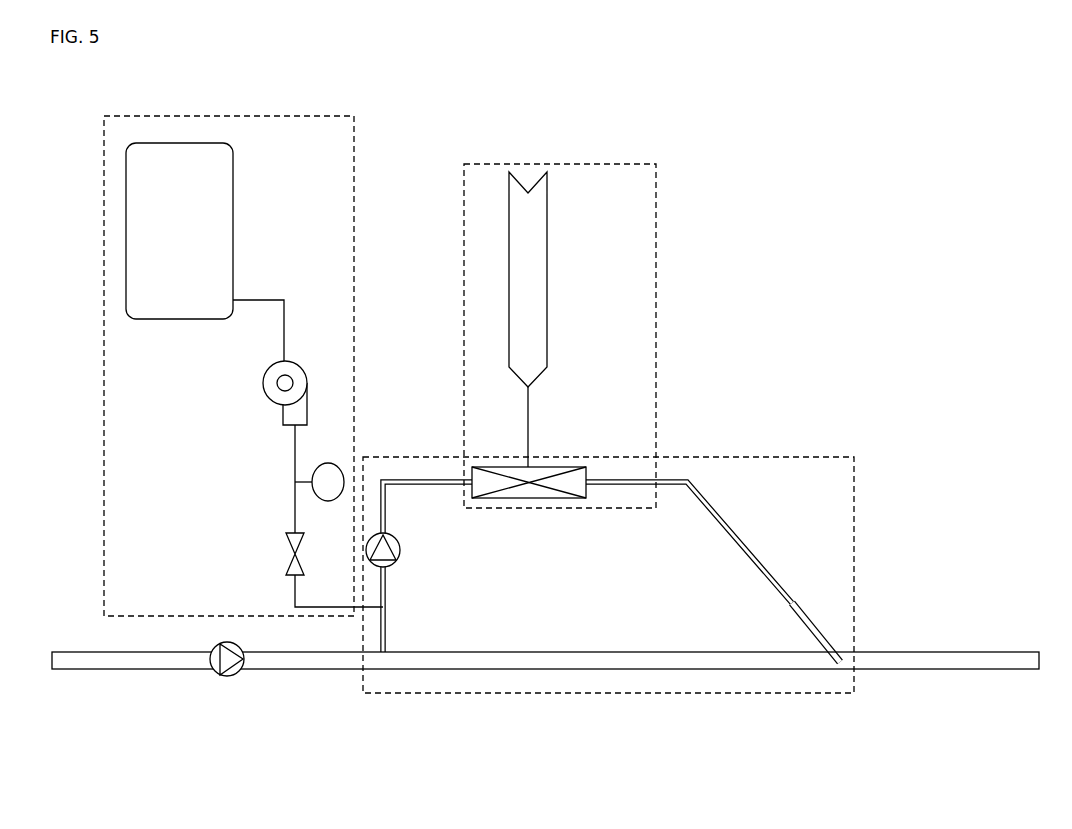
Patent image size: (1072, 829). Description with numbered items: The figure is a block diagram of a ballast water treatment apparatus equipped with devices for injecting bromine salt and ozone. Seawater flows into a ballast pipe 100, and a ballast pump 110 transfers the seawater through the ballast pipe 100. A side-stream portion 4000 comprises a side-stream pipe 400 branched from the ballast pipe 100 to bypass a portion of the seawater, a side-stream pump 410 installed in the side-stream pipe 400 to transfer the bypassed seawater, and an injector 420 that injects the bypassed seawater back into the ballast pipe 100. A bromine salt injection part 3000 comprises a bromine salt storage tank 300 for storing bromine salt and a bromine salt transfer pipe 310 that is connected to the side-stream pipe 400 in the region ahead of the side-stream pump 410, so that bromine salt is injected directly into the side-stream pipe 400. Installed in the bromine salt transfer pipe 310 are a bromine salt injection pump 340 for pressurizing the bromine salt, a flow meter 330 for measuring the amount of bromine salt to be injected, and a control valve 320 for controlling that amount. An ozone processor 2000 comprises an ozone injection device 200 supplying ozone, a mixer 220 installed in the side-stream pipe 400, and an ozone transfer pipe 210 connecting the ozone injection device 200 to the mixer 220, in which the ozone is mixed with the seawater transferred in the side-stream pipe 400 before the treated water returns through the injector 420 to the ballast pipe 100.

The ballast pipe 100 is at (118, 670).
The ballast pump 110 is at (238, 680).
The ozone injection device 200 is at (547, 280).
The ozone transfer pipe 210 is at (532, 425).
The mixer 220 is at (530, 499).
The bromine salt storage tank 300 is at (233, 197).
The bromine salt transfer pipe 310 is at (258, 299).
The control valve 320 is at (286, 558).
The flow meter 330 is at (328, 463).
The bromine salt injection pump 340 is at (263, 392).
The side-stream pipe 400 is at (386, 615).
The side-stream pump 410 is at (400, 543).
The injector 420 is at (805, 600).
The ozone processor 2000 is at (656, 170).
The bromine salt injection part 3000 is at (354, 118).
The side-stream portion 4000 is at (812, 457).